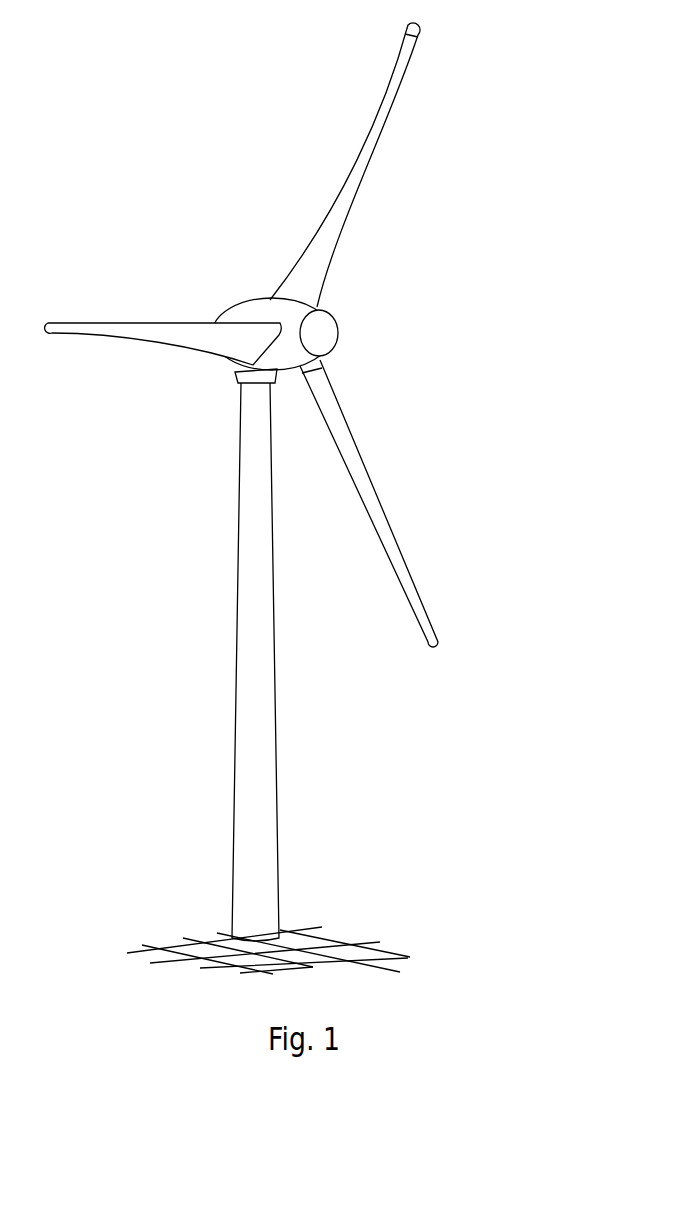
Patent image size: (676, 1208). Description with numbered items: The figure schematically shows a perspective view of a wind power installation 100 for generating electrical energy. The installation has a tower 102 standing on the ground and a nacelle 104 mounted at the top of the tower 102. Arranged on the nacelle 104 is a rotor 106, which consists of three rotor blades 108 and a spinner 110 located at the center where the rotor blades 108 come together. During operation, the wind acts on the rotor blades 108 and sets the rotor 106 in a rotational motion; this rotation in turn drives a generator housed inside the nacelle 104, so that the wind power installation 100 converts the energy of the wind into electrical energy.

The wind power installation 100 is at (197, 449).
The tower 102 is at (260, 748).
The nacelle 104 is at (251, 310).
The rotor 106 is at (398, 266).
The rotor blades 108 is at (371, 123).
The spinner 110 is at (322, 333).